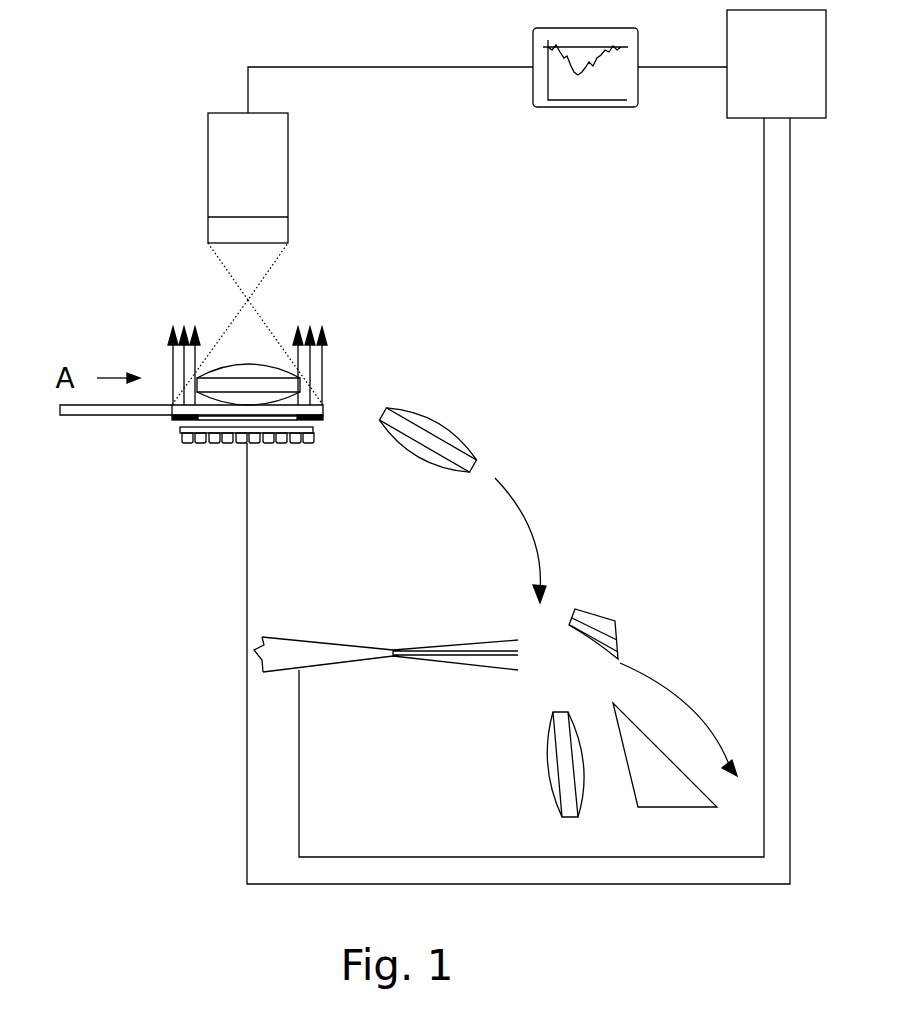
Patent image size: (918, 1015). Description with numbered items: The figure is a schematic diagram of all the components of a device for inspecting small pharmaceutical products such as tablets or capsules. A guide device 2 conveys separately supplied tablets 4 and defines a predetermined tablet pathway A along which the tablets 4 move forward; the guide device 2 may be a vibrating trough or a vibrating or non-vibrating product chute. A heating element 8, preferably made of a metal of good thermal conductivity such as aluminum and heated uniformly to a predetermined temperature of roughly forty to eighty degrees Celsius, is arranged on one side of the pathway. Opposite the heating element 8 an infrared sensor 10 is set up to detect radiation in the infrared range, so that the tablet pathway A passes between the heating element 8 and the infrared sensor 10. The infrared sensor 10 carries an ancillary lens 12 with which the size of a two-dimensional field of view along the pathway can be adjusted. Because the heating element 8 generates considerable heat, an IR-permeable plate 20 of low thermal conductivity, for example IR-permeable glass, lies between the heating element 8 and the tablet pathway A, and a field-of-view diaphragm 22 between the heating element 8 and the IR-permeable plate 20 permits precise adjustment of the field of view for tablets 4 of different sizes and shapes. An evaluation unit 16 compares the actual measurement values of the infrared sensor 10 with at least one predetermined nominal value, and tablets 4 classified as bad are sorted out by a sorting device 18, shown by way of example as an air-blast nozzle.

The guide device 2 is at (148, 413).
The tablets 4 is at (232, 365).
The heating element 8 is at (213, 433).
The infrared sensor 10 is at (254, 193).
The ancillary lens 12 is at (230, 233).
The evaluation unit 16 is at (776, 64).
The sorting device 18 is at (270, 656).
The IR-permeable plate 20 is at (190, 412).
The field-of-view diaphragm 22 is at (312, 423).